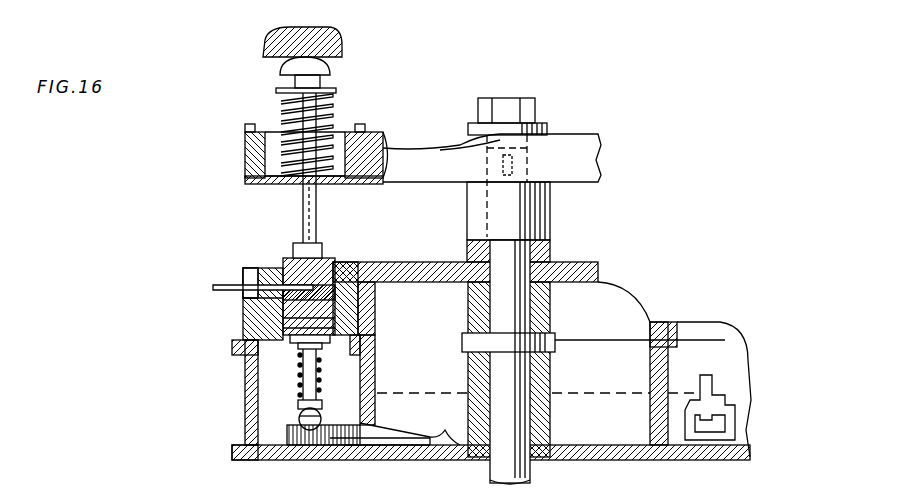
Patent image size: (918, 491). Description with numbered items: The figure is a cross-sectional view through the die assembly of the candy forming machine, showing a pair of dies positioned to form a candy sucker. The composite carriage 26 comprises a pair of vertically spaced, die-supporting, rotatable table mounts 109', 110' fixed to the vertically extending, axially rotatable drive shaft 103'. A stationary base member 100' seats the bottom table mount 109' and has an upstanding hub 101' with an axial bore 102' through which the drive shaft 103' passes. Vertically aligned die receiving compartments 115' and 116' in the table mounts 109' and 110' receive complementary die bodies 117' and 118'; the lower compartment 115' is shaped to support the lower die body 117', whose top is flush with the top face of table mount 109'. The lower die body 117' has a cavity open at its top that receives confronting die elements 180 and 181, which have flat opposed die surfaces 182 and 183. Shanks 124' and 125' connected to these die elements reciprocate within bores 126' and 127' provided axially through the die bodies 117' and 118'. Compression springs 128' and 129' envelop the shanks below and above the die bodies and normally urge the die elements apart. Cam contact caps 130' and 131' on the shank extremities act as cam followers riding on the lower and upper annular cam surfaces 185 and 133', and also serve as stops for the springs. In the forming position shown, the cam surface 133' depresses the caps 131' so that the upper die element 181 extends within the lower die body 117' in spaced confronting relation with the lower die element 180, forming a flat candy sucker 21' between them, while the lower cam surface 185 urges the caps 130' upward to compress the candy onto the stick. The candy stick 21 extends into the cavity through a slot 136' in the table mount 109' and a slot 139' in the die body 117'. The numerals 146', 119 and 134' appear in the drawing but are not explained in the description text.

The upper annular cam surface 133' is at (262, 35).
The cam contact cap 131' is at (345, 63).
The compression spring 129' is at (345, 116).
The body plate 146' is at (492, 134).
The housing 119 is at (265, 132).
The upper die receiving compartment 116' is at (217, 151).
The composite carriage 26 is at (237, 258).
The bore 127' is at (278, 246).
The slot 139' is at (289, 285).
The slot 136' is at (220, 293).
The candy stick 21 is at (228, 281).
The flat candy sucker 21' is at (215, 295).
The die surface 182 is at (258, 328).
The shank 124' is at (241, 375).
The compression spring 128' is at (239, 395).
The cam contact cap 130' is at (238, 420).
The stationary base member 100' is at (458, 386).
The seat plate 134' is at (361, 468).
The upper die body 118' is at (329, 193).
The shank 125' is at (349, 210).
The die surface 183 is at (318, 262).
The upper die element 181 is at (343, 262).
The lower die body 117' is at (465, 333).
The upper table mount 110' is at (456, 176).
The lower table mount 109' is at (433, 241).
The lower die receiving compartment 115' is at (404, 292).
The lower die element 180 is at (370, 312).
The axial bore 102' is at (484, 280).
The bore 126' is at (413, 331).
The upstanding hub 101' is at (477, 369).
The lower annular cam surface 185 is at (355, 420).
The drive shaft 103' is at (529, 291).